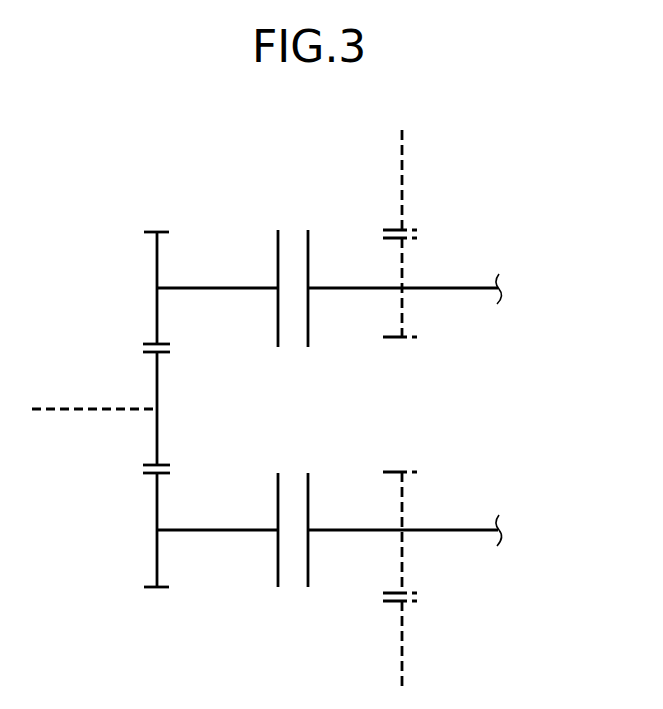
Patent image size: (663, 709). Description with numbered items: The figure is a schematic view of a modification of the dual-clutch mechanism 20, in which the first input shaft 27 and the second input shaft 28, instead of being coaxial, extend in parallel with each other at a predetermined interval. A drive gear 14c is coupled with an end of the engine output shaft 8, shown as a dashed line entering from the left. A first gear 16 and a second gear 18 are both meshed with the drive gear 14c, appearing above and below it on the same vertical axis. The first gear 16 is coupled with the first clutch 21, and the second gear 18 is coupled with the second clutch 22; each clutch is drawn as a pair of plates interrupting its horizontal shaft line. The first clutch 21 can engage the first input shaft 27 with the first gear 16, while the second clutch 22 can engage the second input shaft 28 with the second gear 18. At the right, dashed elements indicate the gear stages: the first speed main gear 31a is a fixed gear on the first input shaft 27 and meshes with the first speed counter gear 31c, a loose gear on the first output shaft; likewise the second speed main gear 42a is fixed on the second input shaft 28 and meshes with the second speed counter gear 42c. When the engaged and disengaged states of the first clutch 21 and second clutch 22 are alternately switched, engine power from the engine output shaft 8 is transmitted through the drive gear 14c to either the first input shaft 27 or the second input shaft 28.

The engine output shaft 8 is at (86, 410).
The drive gear 14c is at (157, 437).
The first gear 16 is at (157, 257).
The second gear 18 is at (157, 551).
The dual-clutch mechanism 20 is at (562, 149).
The first clutch 21 is at (293, 214).
The second clutch 22 is at (293, 612).
The first input shaft 27 is at (355, 290).
The second input shaft 28 is at (342, 529).
The first speed main gear 31a is at (402, 275).
The first speed counter gear 31c is at (402, 185).
The second speed main gear 42a is at (402, 564).
The second speed counter gear 42c is at (402, 649).